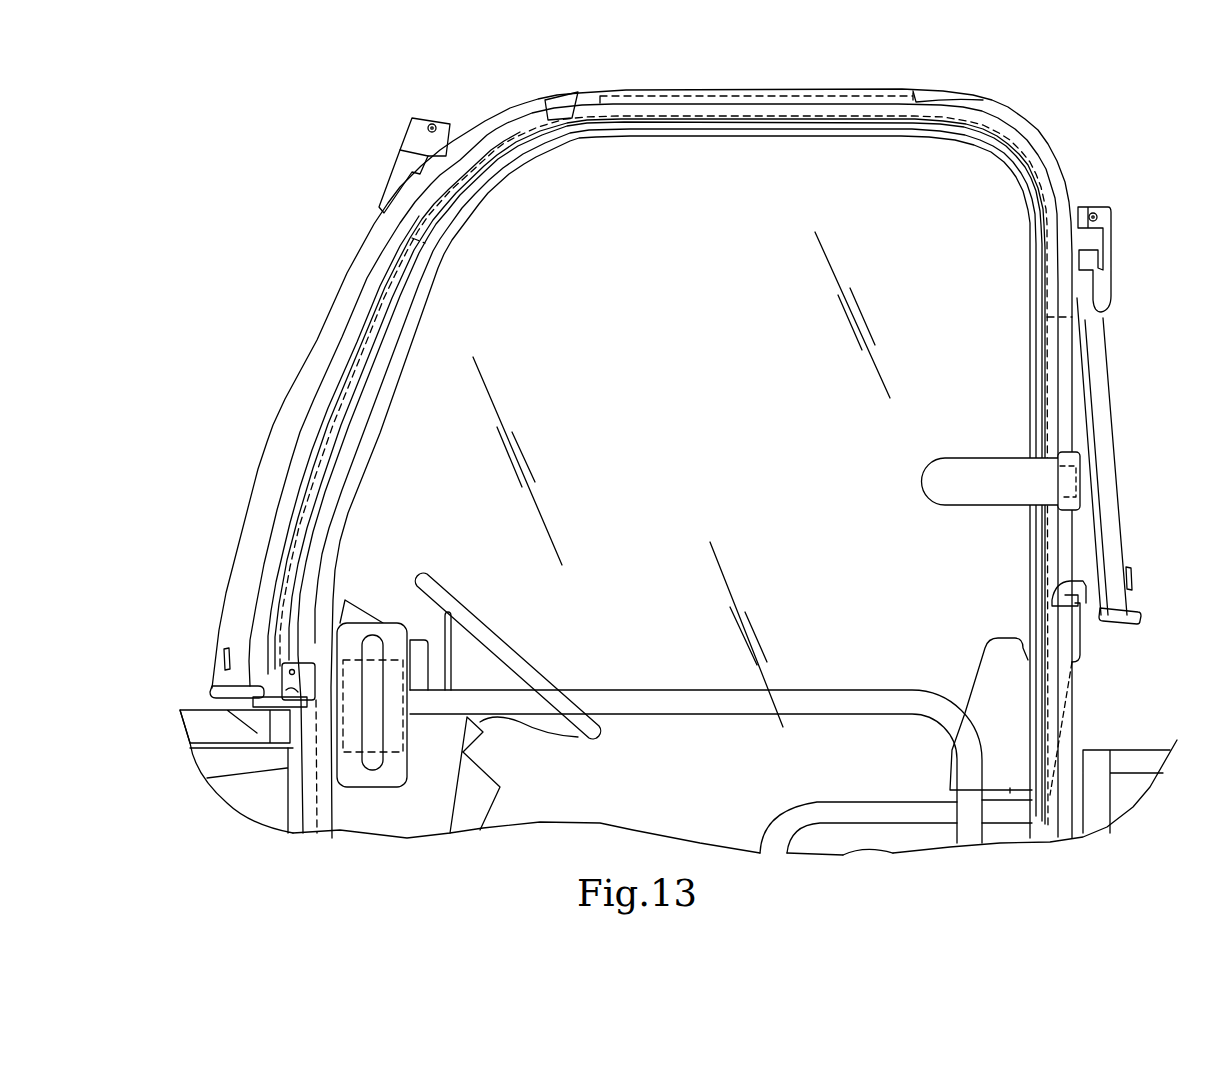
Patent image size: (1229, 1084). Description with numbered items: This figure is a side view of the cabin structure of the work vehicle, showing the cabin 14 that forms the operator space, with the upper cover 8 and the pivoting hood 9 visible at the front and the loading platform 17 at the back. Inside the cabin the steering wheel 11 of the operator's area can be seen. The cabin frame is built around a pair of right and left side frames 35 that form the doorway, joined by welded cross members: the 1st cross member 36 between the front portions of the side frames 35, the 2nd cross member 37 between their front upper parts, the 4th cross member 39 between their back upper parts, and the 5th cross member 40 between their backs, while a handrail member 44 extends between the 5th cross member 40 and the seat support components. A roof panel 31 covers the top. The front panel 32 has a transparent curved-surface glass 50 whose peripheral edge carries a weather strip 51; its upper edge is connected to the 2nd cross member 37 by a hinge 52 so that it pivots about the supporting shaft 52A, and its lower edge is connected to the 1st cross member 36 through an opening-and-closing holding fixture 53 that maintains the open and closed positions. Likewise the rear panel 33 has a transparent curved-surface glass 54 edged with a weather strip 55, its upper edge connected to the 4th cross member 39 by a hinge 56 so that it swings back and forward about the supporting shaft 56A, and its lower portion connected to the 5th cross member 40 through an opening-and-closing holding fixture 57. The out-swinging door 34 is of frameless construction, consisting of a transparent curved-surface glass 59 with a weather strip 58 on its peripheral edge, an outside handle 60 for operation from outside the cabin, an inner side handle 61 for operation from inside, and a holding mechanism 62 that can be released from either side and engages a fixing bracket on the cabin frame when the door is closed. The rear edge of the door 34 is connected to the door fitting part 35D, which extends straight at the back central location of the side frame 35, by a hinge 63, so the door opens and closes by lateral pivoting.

The upper cover 8 is at (232, 795).
The hood 9 is at (197, 704).
The steering wheel 11 is at (468, 668).
The cabin 14 is at (249, 152).
The loading platform 17 is at (1147, 752).
The roof panel 31 is at (667, 88).
The front panel 32 is at (260, 441).
The rear panel 33 is at (1132, 440).
The door 34 is at (776, 147).
The side frame 35 is at (380, 310).
The door fitting part 35D is at (1077, 699).
The 1st cross member 36 is at (278, 716).
The 2nd cross member 37 is at (476, 123).
The 4th cross member 39 is at (1052, 150).
The 5th cross member 40 is at (1080, 635).
The handrail member 44 is at (792, 815).
The transparent curved-surface glass 50 is at (302, 368).
The weather strip 51 is at (275, 532).
The hinge 52 is at (398, 170).
The supporting shaft 52A is at (430, 124).
The opening-and-closing holding fixture 53 is at (280, 670).
The transparent curved-surface glass 54 is at (1108, 386).
The weather strip 55 is at (1128, 614).
The hinge 56 is at (1112, 254).
The supporting shaft 56A is at (1097, 214).
The opening-and-closing holding fixture 57 is at (1085, 580).
The weather strip 58 is at (693, 135).
The transparent curved-surface glass 59 is at (862, 315).
The outside handle 60 is at (378, 640).
The inner side handle 61 is at (800, 690).
The holding mechanism 62 is at (410, 740).
The hinge 63 is at (920, 478).